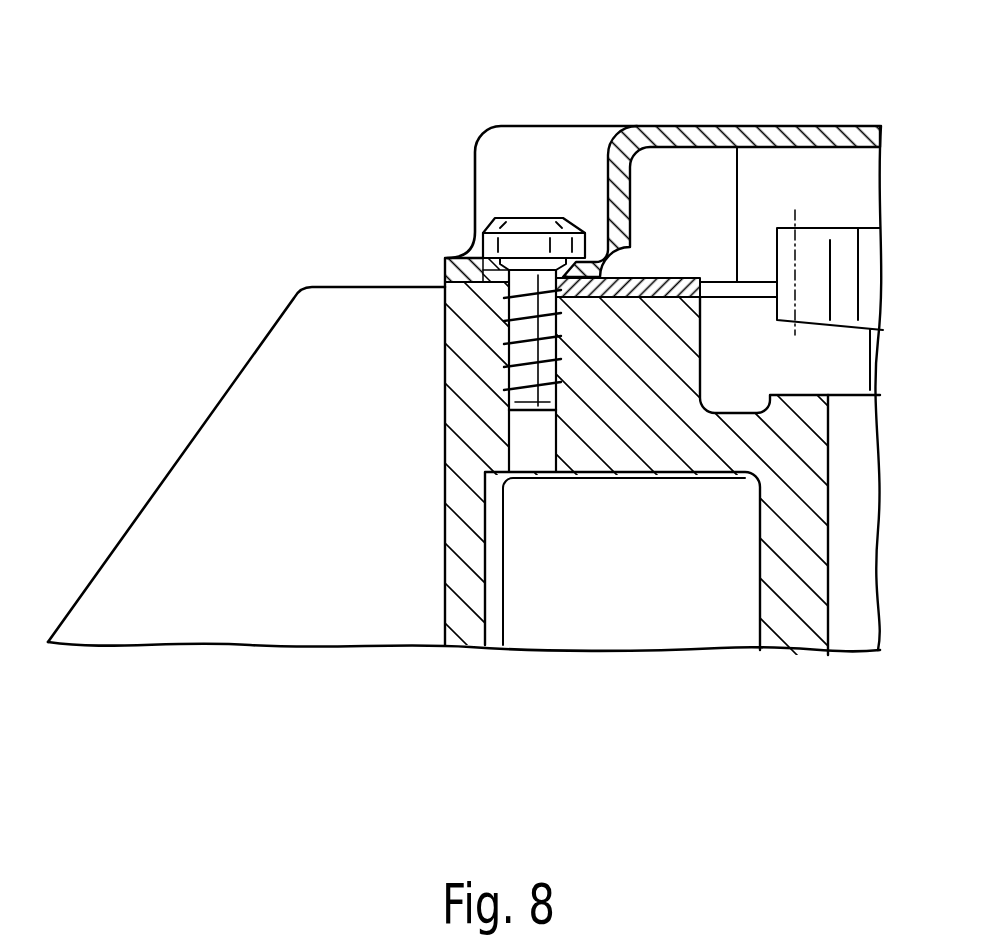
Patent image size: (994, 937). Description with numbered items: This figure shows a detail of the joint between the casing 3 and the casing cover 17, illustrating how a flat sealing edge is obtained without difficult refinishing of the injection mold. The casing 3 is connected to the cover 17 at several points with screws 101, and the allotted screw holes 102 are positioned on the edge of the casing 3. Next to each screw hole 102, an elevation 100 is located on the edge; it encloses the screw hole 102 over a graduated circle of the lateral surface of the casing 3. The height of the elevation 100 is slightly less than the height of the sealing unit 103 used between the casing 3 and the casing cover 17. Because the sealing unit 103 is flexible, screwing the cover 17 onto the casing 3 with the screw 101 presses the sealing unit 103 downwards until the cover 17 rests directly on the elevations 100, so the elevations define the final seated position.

The casing 3 is at (463, 422).
The casing cover 17 is at (800, 127).
The elevation 100 is at (457, 283).
The screw 101 is at (527, 218).
The screw hole 102 is at (513, 432).
The sealing unit 103 is at (668, 283).